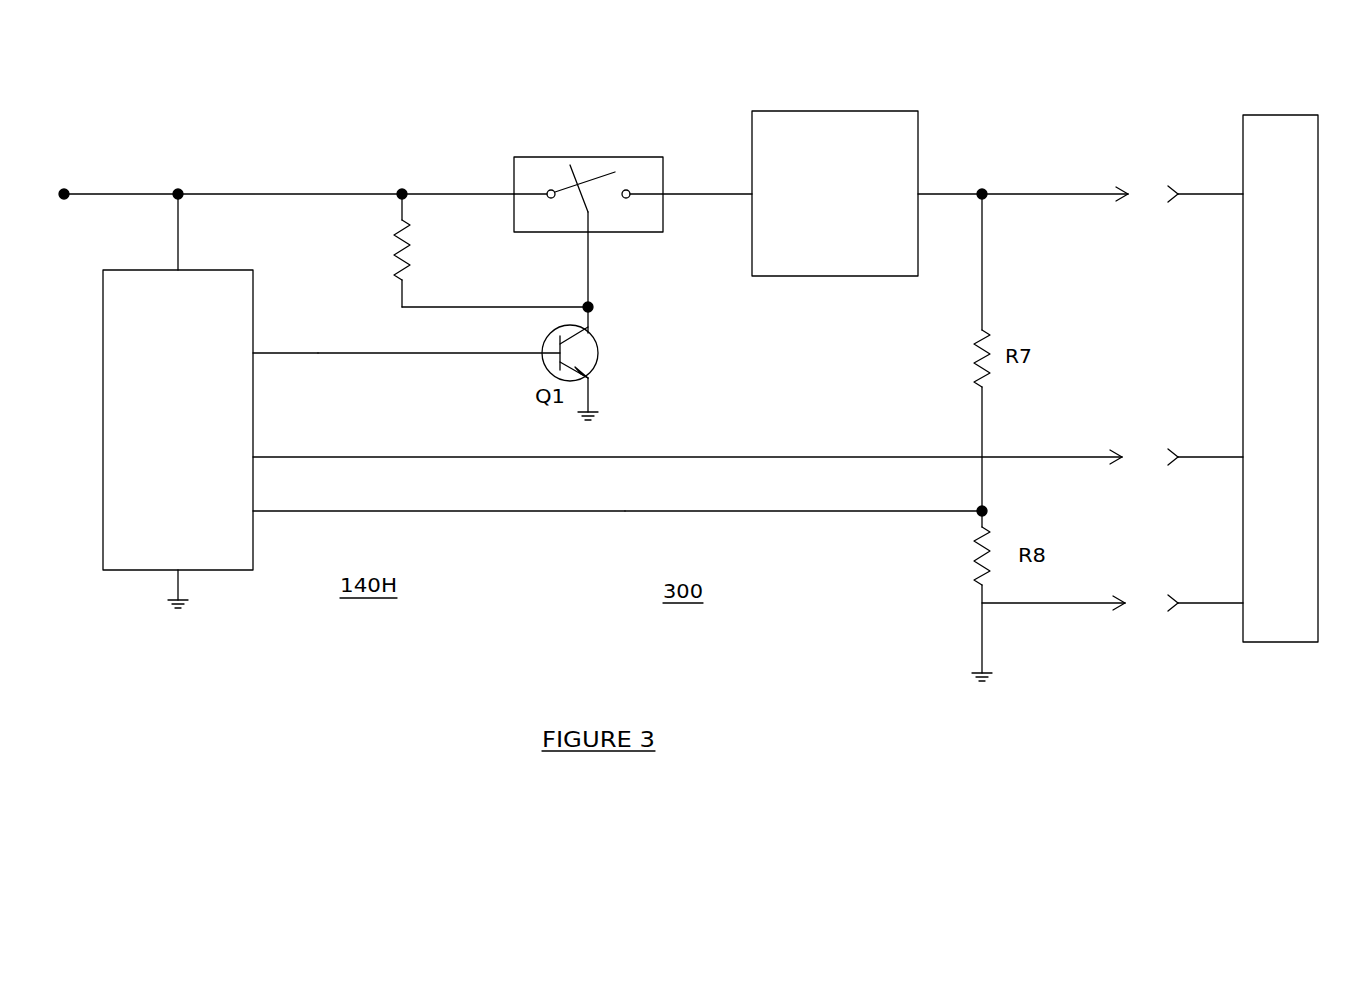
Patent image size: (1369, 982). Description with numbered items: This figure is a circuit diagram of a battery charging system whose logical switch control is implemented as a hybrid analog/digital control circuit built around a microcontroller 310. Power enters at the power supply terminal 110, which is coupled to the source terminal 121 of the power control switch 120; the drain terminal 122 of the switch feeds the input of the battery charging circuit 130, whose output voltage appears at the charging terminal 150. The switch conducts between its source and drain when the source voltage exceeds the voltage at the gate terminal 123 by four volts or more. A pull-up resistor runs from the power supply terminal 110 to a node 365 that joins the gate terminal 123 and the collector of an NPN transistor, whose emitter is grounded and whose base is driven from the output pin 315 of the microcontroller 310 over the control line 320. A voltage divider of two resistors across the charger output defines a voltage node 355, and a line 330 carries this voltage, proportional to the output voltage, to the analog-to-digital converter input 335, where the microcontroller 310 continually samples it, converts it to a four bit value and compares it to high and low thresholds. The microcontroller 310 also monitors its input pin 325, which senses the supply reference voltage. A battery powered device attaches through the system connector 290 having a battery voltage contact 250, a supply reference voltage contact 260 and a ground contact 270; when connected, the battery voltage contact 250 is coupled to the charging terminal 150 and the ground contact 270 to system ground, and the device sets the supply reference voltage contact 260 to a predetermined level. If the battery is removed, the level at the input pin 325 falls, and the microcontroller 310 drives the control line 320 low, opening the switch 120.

The power supply terminal 110 is at (72, 190).
The microcontroller 310 is at (215, 270).
The output pin OUT 315 is at (253, 353).
The control line 320 is at (318, 353).
The IN pin 325 is at (253, 457).
The ADC input 335 is at (253, 511).
The voltage sense line 330 is at (625, 511).
The gate node 365 is at (588, 307).
The power control switch 120 is at (588, 157).
The source terminal 121 is at (514, 193).
The drain terminal 122 is at (665, 193).
The gate terminal 123 is at (592, 233).
The battery charging circuit 130 is at (837, 111).
The charging terminal 150 is at (1123, 205).
The voltage node 355 is at (982, 511).
The system connector 290 is at (1282, 115).
The DCIO contact 250 is at (1243, 193).
The VDD contact 260 is at (1243, 452).
The DGND contact 270 is at (1243, 608).